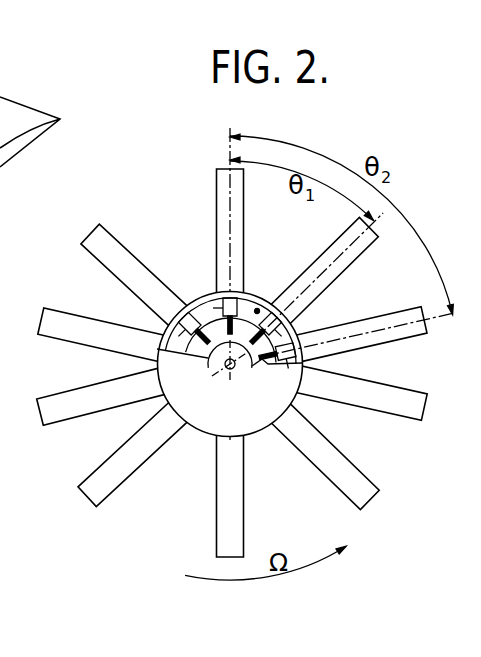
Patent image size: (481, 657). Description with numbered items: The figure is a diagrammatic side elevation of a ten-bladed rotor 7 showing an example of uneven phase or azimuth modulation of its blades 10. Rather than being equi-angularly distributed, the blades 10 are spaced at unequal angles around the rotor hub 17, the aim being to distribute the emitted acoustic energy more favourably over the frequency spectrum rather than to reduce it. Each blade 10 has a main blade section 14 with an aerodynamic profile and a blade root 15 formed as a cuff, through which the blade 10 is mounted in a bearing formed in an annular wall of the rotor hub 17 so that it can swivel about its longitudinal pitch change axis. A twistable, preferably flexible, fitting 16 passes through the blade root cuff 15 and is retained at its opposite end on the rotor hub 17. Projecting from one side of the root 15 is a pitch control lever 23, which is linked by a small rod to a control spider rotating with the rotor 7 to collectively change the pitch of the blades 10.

The rotor 7 is at (133, 415).
The blade 10 is at (230, 485).
The main blade section 14 is at (112, 255).
The blade root 15 is at (192, 332).
The fitting 16 is at (157, 349).
The rotor hub 17 is at (210, 410).
The pitch control lever 23 is at (257, 310).